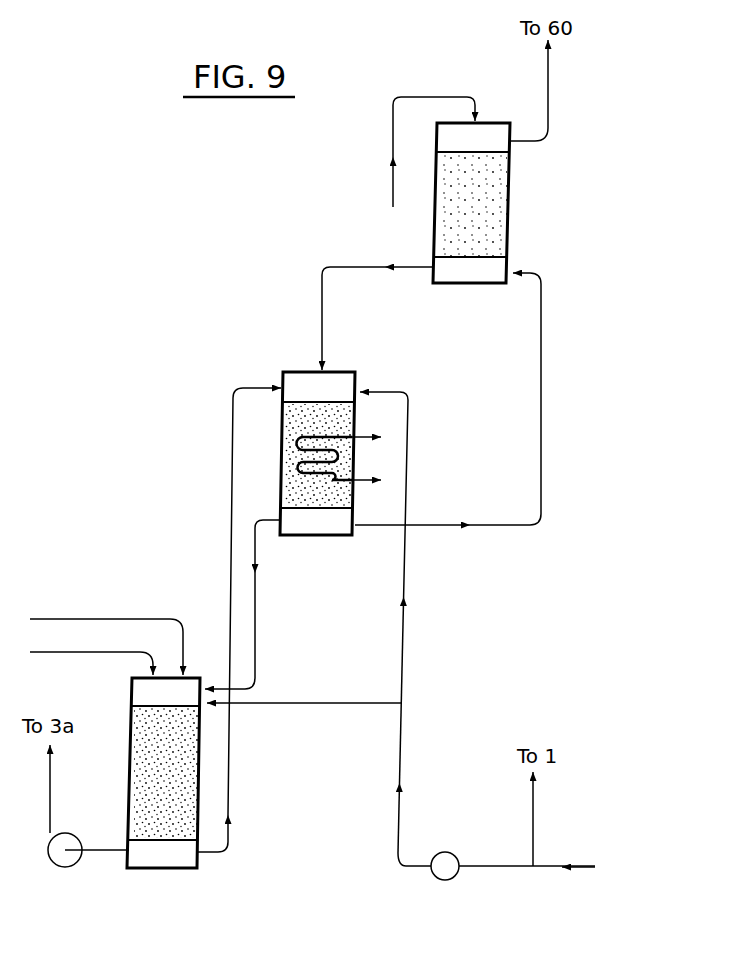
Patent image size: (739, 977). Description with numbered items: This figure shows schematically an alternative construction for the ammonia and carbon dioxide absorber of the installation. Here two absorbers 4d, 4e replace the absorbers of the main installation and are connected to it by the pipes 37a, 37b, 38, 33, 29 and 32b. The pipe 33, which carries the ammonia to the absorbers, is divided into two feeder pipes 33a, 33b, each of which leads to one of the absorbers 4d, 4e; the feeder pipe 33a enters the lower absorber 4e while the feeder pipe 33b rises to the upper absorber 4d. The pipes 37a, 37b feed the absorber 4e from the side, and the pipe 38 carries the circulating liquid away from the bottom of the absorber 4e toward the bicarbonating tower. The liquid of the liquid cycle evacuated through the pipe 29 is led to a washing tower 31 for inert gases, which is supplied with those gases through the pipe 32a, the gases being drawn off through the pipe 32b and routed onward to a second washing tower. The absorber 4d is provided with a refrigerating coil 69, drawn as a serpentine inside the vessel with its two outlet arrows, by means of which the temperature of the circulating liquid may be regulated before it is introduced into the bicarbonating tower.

The pipe 29 is at (434, 141).
The washing tower 31 is at (510, 203).
The pipe 32a is at (448, 400).
The pipe 32b is at (550, 90).
The pipe 33 is at (499, 826).
The feeder pipe 33a is at (304, 691).
The feeder pipe 33b is at (407, 622).
The pipe 37a is at (106, 636).
The pipe 37b is at (91, 652).
The pipe 38 is at (50, 790).
The absorber 4d is at (283, 481).
The absorber 4e is at (200, 785).
The refrigerating coil 69 is at (366, 434).